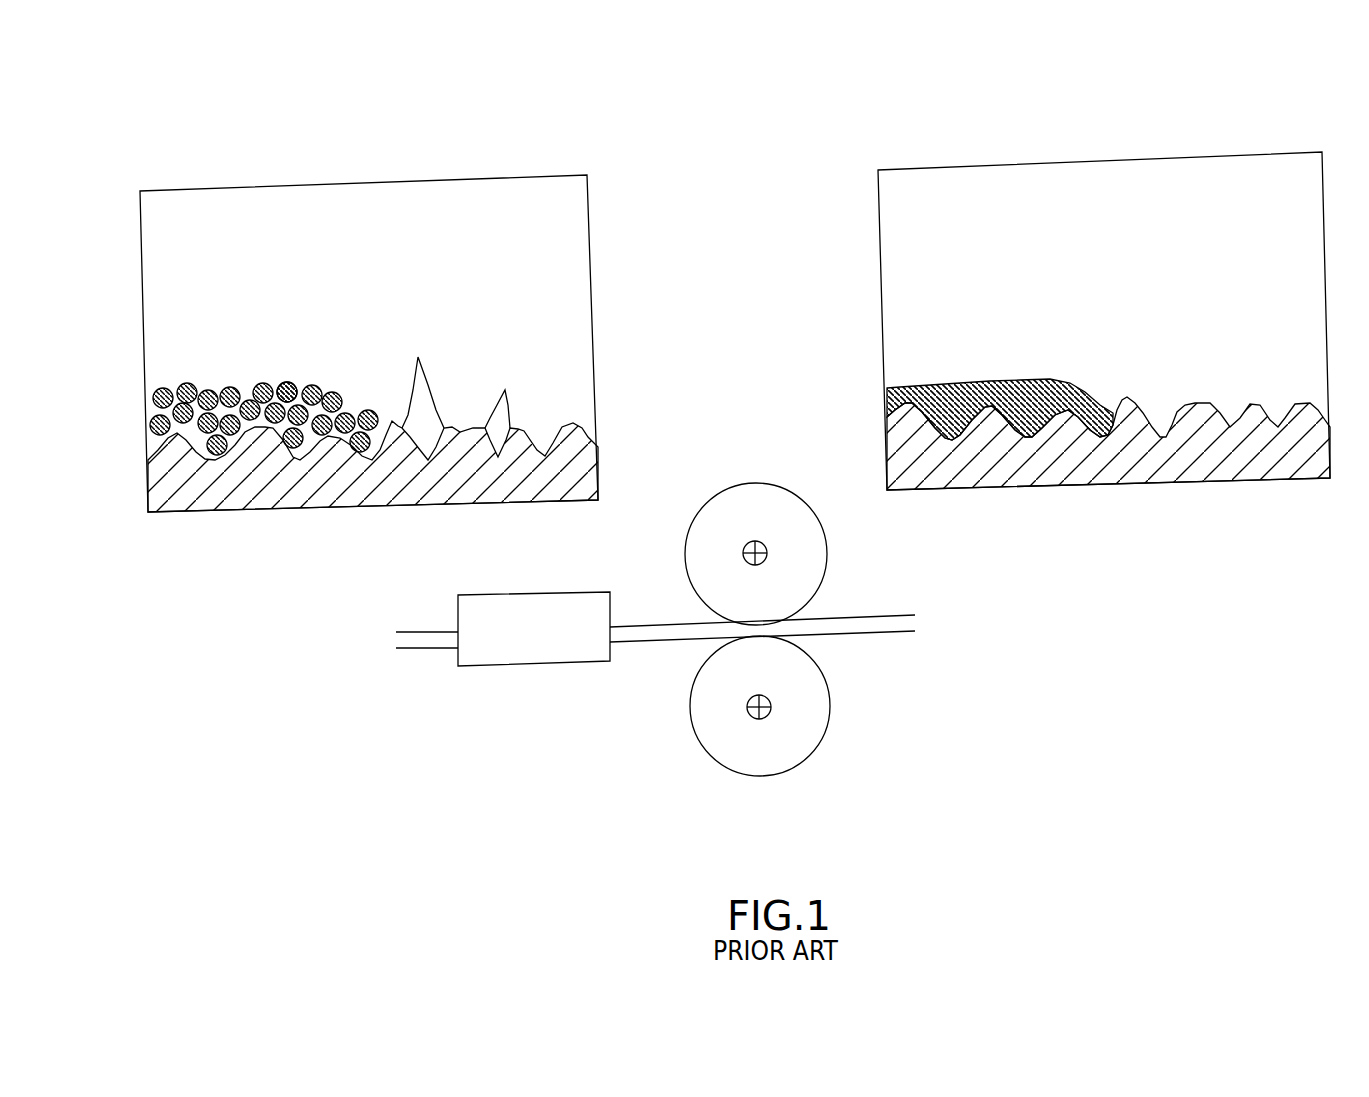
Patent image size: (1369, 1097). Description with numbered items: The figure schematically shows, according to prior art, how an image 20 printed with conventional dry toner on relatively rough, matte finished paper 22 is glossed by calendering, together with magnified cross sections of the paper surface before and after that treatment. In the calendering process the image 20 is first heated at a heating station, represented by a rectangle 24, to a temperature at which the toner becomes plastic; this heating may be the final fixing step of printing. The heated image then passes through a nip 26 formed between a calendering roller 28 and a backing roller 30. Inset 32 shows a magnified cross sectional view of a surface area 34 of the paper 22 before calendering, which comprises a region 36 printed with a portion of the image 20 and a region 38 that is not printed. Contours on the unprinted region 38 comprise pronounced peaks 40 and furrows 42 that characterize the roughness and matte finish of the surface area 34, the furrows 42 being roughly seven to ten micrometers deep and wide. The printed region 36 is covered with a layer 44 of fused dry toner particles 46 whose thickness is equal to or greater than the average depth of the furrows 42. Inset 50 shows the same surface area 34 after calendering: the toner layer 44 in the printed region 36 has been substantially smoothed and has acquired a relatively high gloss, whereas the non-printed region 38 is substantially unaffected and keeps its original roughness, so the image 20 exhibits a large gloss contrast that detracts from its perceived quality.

The image 20 is at (410, 489).
The matte finished paper 22 is at (442, 642).
The heating station 24 is at (540, 655).
The nip 26 is at (683, 624).
The calendering roller 28 is at (760, 495).
The backing roller 30 is at (758, 763).
The inset 32 is at (535, 139).
The surface area 34 is at (403, 255).
The printed region 36 is at (512, 311).
The non-printed region 38 is at (250, 325).
The peaks 40 is at (423, 380).
The furrows 42 is at (507, 396).
The toner layer 44 is at (177, 374).
The dry toner particles 46 is at (305, 403).
The inset 50 is at (1270, 117).